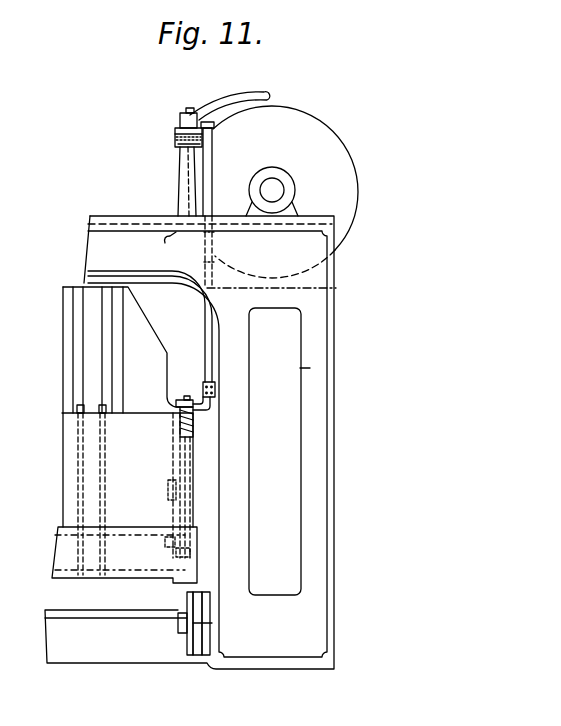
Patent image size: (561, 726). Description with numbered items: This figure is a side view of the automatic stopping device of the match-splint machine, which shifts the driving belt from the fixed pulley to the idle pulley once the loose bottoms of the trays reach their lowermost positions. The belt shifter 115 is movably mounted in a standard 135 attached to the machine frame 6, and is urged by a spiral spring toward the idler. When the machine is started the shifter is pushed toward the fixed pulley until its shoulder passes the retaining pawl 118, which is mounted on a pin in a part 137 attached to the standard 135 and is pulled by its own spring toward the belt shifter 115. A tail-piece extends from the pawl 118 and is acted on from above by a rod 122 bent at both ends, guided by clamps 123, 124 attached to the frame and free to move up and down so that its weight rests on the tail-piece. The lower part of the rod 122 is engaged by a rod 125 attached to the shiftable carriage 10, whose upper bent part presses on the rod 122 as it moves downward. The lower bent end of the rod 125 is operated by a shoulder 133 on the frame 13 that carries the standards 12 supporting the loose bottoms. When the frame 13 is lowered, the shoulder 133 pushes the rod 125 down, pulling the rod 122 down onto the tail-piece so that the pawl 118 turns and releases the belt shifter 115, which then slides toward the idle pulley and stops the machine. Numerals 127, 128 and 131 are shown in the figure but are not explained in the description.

The machine frame 6 is at (90, 243).
The shiftable carriage 10 is at (65, 425).
The standards 12 is at (103, 468).
The frames 13 is at (92, 565).
The belt shifter 115 is at (265, 96).
The retaining pawl 118 is at (192, 113).
The rod 122 is at (213, 161).
The clamp 123 is at (208, 254).
The clamp 124 is at (203, 386).
The rod 125 is at (172, 492).
The plunger 127 is at (173, 442).
The spring 128 is at (168, 537).
The connector 131 is at (193, 428).
The shoulder 133 is at (152, 558).
The standard 135 is at (180, 176).
The part 137 is at (197, 138).